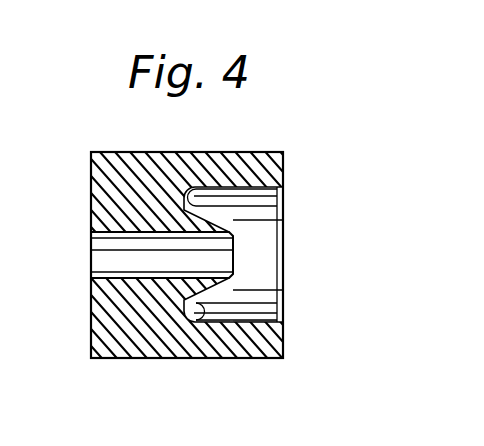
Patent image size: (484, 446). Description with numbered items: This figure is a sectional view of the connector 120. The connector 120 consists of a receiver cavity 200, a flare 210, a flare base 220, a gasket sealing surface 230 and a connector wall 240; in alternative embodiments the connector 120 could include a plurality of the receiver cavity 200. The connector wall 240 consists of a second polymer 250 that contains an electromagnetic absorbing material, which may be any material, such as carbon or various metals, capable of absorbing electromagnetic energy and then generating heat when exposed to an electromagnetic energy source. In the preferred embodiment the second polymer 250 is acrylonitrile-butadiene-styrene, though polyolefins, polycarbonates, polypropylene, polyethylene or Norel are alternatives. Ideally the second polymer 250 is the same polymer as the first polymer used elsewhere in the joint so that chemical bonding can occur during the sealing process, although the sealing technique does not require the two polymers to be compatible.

The connector 120 is at (93, 152).
The receiver cavity 200 is at (252, 208).
The flare 210 is at (207, 222).
The flare base 220 is at (172, 186).
The gasket sealing surface 230 is at (243, 320).
The connector wall 240 is at (207, 318).
The second polymer 250 is at (130, 337).